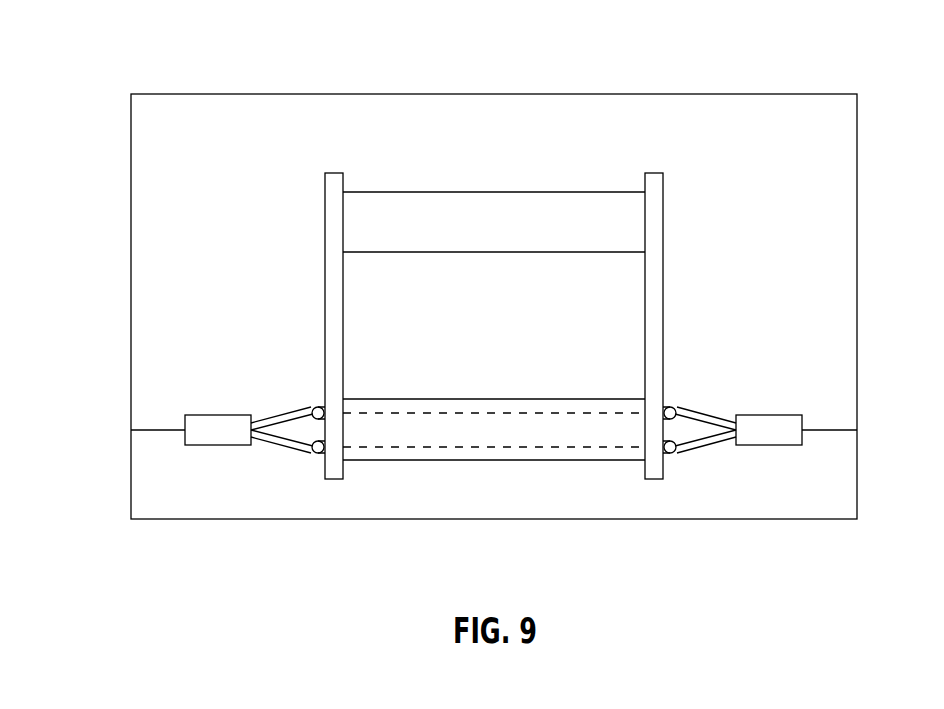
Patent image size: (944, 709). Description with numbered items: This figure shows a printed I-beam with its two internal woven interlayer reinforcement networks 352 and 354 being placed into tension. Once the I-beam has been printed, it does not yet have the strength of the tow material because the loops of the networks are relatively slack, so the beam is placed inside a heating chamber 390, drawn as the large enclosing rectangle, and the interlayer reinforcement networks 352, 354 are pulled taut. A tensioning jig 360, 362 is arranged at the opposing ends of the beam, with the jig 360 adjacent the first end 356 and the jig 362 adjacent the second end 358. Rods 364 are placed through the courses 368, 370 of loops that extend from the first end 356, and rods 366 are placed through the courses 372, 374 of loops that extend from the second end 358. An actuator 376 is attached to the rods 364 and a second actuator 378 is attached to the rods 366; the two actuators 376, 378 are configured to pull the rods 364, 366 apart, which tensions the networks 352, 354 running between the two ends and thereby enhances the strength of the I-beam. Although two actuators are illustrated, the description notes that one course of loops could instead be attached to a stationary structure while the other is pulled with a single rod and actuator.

The heating chamber 390 is at (120, 37).
The interlayer reinforcement network 352 is at (480, 412).
The interlayer reinforcement network 354 is at (543, 448).
The first end 356 is at (357, 191).
The second end 358 is at (629, 191).
The tensioning jig 360 is at (325, 218).
The tensioning jig 362 is at (663, 228).
The rods 364 is at (312, 405).
The rods 366 is at (676, 405).
The course 368 is at (318, 406).
The course 370 is at (318, 455).
The course 372 is at (670, 406).
The course 374 is at (670, 455).
The actuator 376 is at (212, 426).
The actuator 378 is at (764, 426).